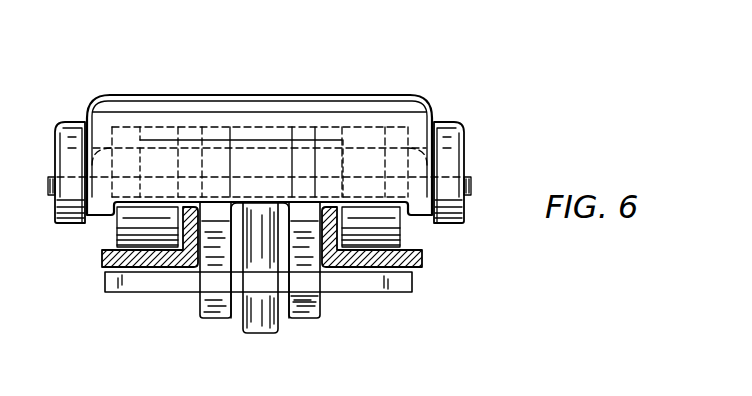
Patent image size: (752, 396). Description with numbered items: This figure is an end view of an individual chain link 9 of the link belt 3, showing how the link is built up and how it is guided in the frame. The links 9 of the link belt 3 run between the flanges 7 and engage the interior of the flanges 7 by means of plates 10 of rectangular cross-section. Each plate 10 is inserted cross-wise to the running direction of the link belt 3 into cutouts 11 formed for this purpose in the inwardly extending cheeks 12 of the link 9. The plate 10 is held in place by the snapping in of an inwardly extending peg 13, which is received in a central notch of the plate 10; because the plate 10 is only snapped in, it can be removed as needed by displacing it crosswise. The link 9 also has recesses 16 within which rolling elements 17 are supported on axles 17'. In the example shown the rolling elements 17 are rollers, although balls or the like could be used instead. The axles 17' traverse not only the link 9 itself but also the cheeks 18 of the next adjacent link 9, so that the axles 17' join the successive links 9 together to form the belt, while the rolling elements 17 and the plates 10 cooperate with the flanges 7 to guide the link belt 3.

The link belt 3 is at (337, 93).
The flange 7 is at (181, 265).
The chain link 9 is at (231, 102).
The plate 10 is at (135, 291).
The cutout 11 is at (318, 297).
The cheek 12 is at (217, 320).
The peg 13 is at (274, 333).
The recess 16 is at (185, 127).
The rolling element 17 is at (253, 129).
The axle 17' is at (273, 167).
The cheek 18 is at (70, 124).